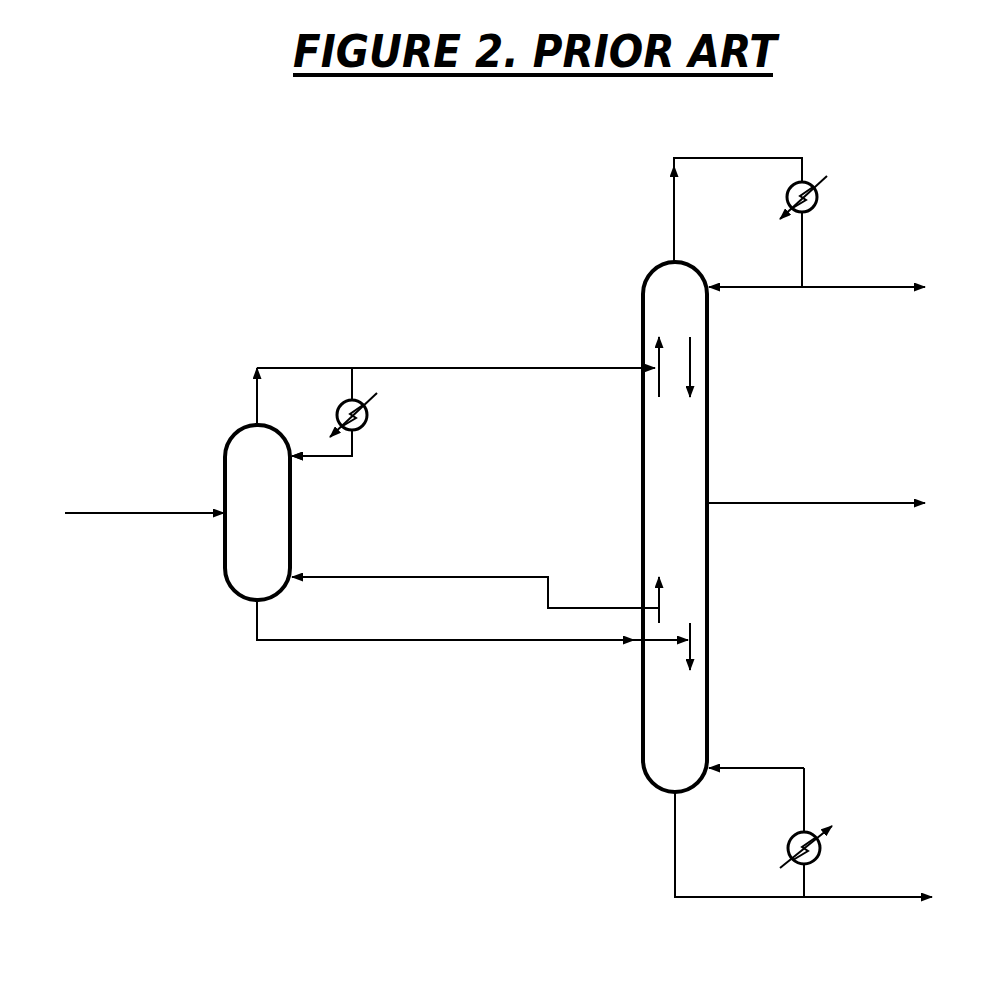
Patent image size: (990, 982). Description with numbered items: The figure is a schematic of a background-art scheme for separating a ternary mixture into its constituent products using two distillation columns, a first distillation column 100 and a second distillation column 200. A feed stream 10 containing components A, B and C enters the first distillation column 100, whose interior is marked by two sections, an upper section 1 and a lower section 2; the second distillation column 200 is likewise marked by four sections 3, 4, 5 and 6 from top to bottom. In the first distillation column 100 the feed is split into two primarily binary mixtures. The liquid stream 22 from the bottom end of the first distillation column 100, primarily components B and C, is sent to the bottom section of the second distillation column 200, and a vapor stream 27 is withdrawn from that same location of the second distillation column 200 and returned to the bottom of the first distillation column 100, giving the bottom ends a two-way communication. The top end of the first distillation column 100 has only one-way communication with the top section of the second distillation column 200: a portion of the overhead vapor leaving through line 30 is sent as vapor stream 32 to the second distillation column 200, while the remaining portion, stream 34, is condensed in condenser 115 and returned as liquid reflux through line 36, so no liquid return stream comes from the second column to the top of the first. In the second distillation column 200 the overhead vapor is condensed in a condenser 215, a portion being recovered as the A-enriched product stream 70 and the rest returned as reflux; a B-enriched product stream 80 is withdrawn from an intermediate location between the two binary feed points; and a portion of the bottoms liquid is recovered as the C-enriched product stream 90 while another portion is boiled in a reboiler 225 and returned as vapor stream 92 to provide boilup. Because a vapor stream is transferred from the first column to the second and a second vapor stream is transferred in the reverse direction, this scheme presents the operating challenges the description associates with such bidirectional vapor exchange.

The upper section of flash vessel 1 is at (264, 489).
The lower section of flash vessel 2 is at (264, 568).
The top section of column 3 is at (681, 327).
The upper middle section of column 4 is at (681, 455).
The lower middle section of column 5 is at (681, 560).
The bottom section of column 6 is at (681, 735).
The feed stream 10 is at (113, 515).
The liquid stream 22 is at (490, 642).
The vapor stream 27 is at (500, 544).
The vapor overhead line from vessel 30 is at (257, 394).
The vapor stream 32 is at (494, 366).
The vapor stream portion 34 is at (351, 382).
The liquid reflux line 36 is at (320, 462).
The A-enriched product stream 70 is at (856, 286).
The B-enriched product stream 80 is at (810, 501).
The C-enriched product stream 90 is at (855, 897).
The vapor stream 92 is at (762, 766).
The first distillation column 100 is at (313, 533).
The condenser 115 is at (370, 418).
The second distillation column 200 is at (710, 647).
The overhead condenser 215 is at (822, 188).
The reboiler 225 is at (823, 848).